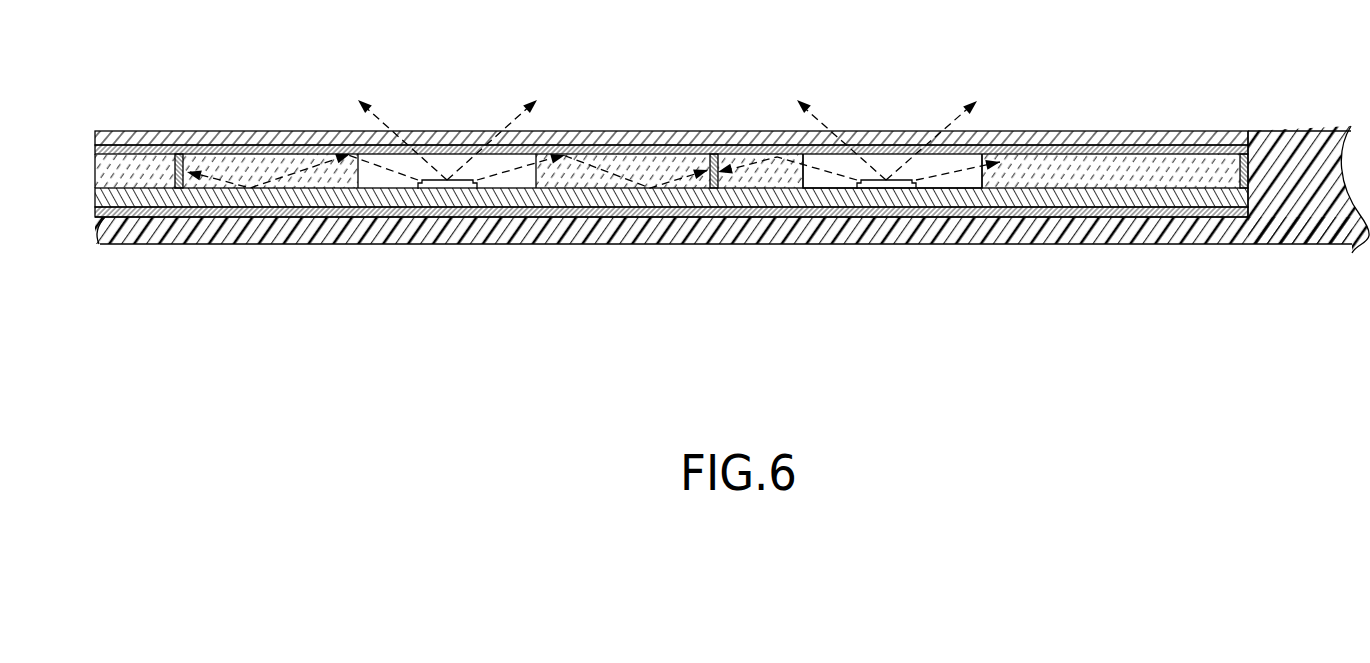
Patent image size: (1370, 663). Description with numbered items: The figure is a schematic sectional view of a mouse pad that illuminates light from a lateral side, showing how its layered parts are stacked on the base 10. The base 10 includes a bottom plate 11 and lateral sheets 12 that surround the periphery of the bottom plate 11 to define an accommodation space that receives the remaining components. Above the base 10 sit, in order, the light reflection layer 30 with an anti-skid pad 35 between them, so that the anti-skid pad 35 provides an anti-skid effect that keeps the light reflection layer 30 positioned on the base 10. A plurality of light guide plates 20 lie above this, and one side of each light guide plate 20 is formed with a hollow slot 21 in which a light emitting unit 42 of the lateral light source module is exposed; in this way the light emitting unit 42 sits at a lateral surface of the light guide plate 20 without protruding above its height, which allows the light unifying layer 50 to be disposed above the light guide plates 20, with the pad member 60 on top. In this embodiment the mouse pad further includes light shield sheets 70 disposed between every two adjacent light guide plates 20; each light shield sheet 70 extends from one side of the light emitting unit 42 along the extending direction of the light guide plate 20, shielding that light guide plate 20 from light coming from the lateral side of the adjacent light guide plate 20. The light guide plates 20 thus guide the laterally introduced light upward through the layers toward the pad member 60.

The base 10 is at (1263, 248).
The bottom plate 11 is at (1110, 232).
The lateral sheet 12 is at (1303, 150).
The light guide plate 20 is at (1170, 170).
The hollow slot 21 is at (959, 182).
The light reflection layer 30 is at (830, 198).
The anti-skid pad 35 is at (745, 212).
The light emitting unit 42 is at (887, 186).
The light unifying layer 50 is at (1048, 149).
The pad member 60 is at (1110, 138).
The light shield sheet 70 is at (715, 154).